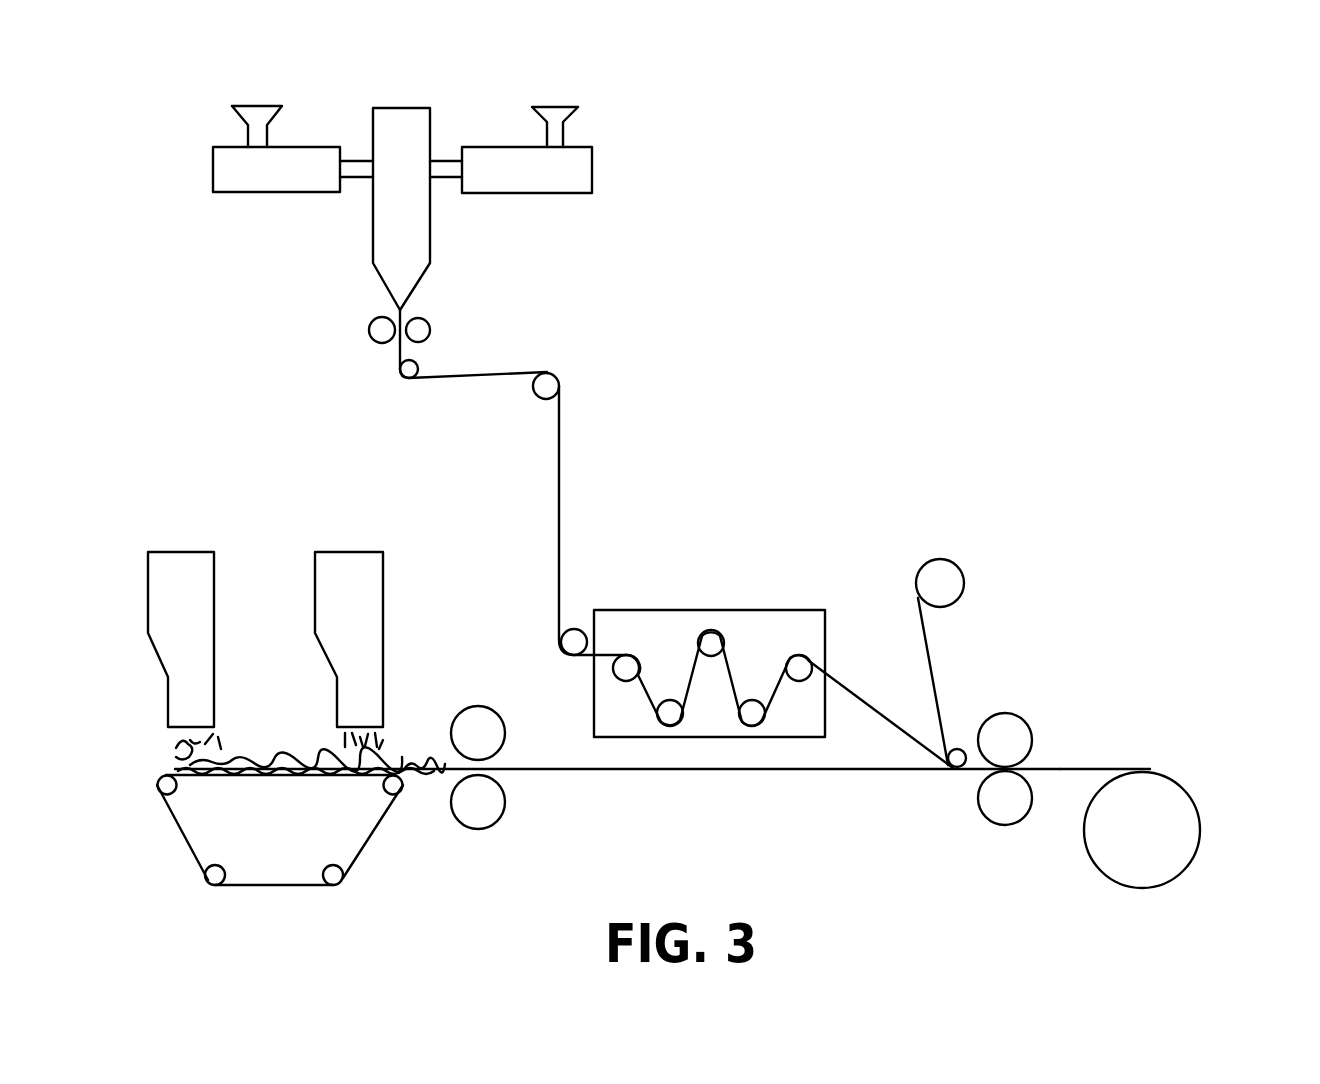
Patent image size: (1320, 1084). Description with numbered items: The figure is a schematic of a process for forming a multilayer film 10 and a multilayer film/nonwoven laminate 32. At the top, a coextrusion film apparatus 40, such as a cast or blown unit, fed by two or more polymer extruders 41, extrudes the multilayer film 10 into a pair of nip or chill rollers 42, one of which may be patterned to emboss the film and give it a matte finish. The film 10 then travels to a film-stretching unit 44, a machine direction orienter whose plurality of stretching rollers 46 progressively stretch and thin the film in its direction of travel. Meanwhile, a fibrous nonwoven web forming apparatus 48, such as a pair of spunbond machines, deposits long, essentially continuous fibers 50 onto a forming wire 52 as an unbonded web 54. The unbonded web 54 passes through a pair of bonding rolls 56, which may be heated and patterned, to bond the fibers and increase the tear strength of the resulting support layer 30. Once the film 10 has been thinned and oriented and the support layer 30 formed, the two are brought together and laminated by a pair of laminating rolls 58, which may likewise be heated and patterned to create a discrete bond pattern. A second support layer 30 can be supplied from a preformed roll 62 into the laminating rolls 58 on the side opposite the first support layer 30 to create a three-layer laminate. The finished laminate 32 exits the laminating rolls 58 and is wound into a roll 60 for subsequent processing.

The multilayer film 10 is at (465, 378).
The support layer 30 is at (585, 770).
The multilayer film/nonwoven laminate 32 is at (1092, 770).
The coextrusion film apparatus 40 is at (403, 122).
The polymer extruders 41 is at (212, 167).
The nip or chill rollers 42 is at (368, 330).
The film-stretching unit 44 is at (742, 609).
The stretching rollers 46 is at (627, 655).
The fibrous nonwoven web forming apparatus 48 is at (178, 557).
The fibers 50 is at (333, 743).
The forming wire 52 is at (277, 887).
The unbonded web 54 is at (430, 757).
The bonding rolls 56 is at (485, 708).
The laminating rolls 58 is at (1022, 717).
The roll 60 is at (1183, 868).
The preformed roll 62 is at (957, 563).